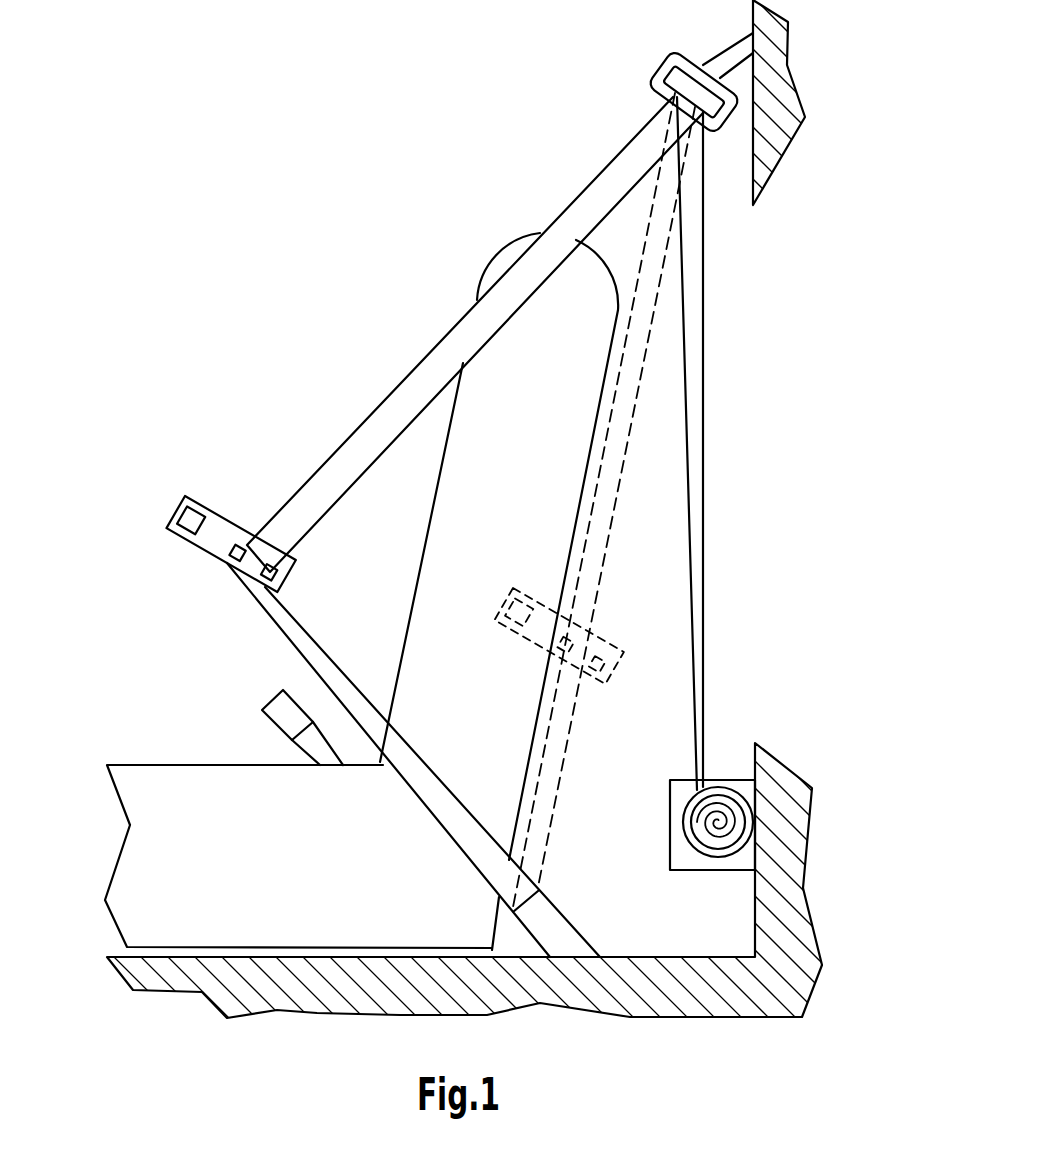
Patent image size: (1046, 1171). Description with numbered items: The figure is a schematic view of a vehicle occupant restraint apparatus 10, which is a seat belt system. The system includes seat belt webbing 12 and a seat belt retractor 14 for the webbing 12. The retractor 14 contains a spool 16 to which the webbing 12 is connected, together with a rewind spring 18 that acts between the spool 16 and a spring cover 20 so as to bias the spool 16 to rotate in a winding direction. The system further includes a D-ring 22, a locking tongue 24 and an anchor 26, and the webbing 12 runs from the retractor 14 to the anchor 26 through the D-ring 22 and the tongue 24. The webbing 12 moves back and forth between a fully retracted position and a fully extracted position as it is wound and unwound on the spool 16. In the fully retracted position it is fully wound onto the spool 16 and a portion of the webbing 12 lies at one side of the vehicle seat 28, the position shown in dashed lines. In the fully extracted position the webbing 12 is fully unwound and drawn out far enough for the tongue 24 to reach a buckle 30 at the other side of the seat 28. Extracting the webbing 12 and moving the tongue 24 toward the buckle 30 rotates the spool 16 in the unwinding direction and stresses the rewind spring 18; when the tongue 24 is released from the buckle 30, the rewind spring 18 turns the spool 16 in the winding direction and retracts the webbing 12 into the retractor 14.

The vehicle occupant restraint apparatus 10 is at (440, 140).
The seat belt webbing 12 is at (700, 412).
The seat belt retractor 14 is at (726, 742).
The spool 16 is at (740, 813).
The rewind spring 18 is at (683, 837).
The spring cover 20 is at (670, 792).
The D-ring 22 is at (657, 82).
The locking tongue 24 is at (172, 517).
The anchor 26 is at (545, 932).
The vehicle seat 28 is at (147, 763).
The buckle 30 is at (273, 702).